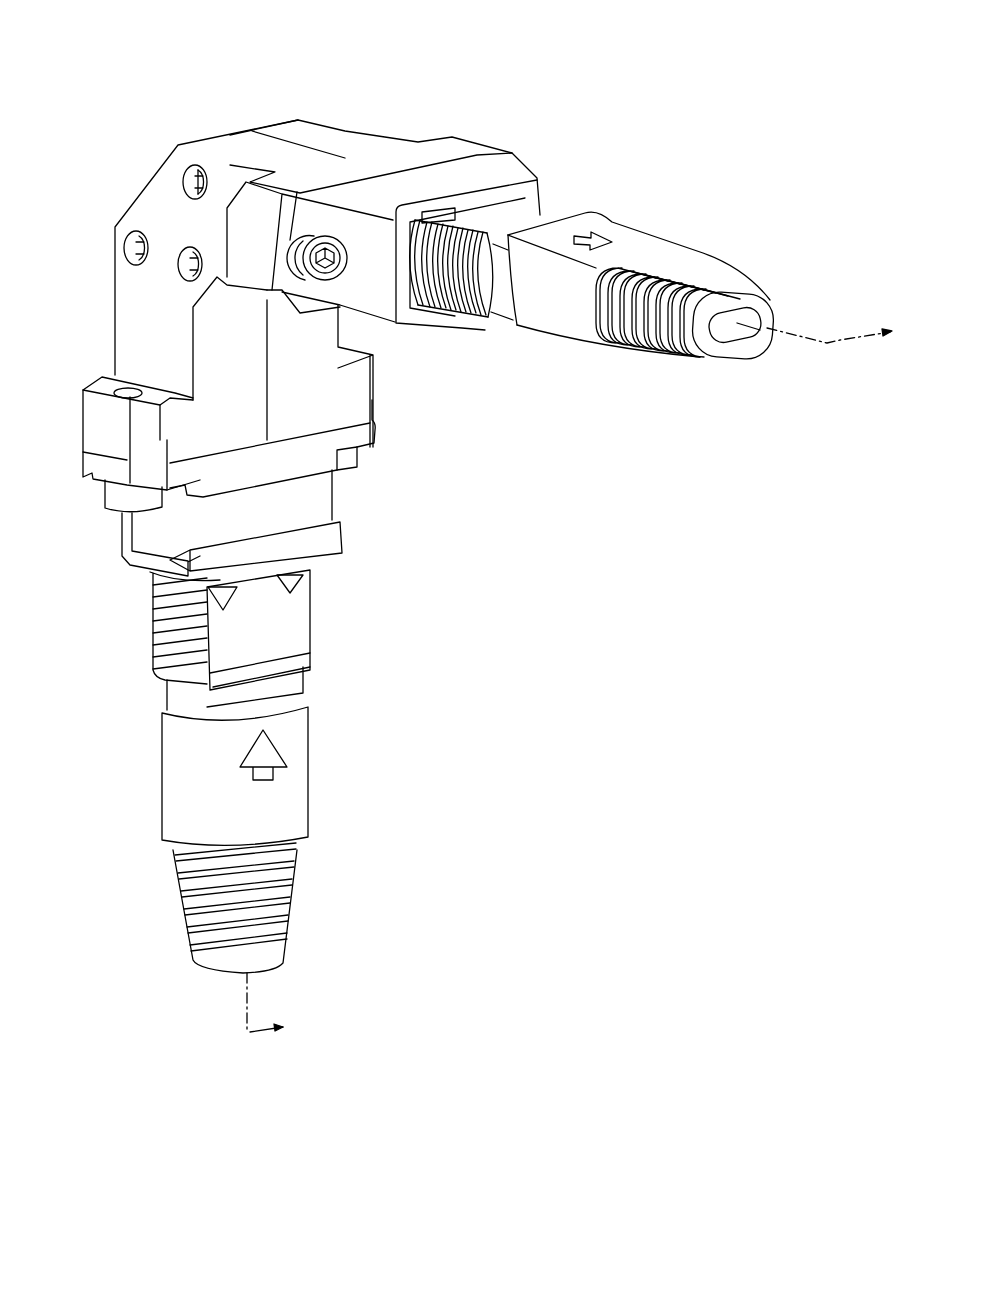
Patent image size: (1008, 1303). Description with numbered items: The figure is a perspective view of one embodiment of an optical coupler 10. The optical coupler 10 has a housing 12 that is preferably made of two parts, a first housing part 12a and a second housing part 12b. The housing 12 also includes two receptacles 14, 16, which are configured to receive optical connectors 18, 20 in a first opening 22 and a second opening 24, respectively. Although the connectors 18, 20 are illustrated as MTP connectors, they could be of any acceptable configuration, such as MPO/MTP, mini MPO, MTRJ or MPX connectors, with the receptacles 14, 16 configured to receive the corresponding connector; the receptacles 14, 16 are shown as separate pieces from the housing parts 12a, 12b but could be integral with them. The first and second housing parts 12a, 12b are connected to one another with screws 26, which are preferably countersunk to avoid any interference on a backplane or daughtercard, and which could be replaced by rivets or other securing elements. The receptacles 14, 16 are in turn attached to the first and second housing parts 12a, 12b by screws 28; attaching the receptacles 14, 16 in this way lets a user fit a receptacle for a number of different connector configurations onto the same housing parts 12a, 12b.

The optical coupler 10 is at (709, 148).
The housing 12 is at (420, 483).
The first housing part 12a is at (153, 168).
The second housing part 12b is at (364, 390).
The receptacle 14 is at (122, 531).
The receptacle 16 is at (524, 170).
The optical connector 18 is at (312, 757).
The optical connector 20 is at (580, 343).
The first opening 22 is at (142, 566).
The second opening 24 is at (428, 308).
The screws 26 is at (121, 247).
The screws 28 is at (333, 190).